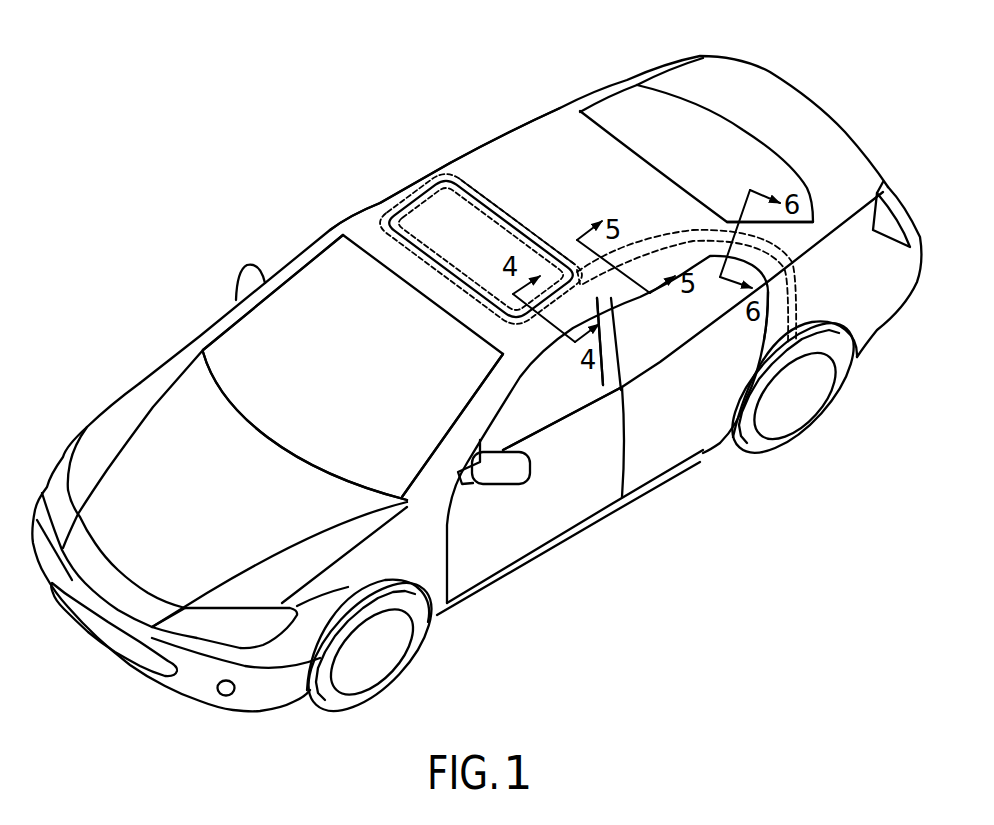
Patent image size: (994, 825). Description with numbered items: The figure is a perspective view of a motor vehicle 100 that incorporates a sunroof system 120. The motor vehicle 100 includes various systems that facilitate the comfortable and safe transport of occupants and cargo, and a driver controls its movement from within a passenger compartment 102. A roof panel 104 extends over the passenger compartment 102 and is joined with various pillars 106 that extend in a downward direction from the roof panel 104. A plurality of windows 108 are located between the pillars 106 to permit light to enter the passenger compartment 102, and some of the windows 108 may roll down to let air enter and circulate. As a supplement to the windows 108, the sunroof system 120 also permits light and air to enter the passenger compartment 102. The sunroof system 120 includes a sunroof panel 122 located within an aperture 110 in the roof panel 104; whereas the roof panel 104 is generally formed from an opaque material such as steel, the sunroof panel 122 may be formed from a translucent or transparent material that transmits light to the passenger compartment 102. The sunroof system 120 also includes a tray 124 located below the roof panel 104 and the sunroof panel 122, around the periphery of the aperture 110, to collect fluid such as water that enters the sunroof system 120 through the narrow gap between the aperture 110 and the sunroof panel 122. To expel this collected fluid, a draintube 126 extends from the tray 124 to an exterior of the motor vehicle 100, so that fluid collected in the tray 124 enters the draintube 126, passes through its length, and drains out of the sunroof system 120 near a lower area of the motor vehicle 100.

The motor vehicle 100 is at (222, 146).
The passenger compartment 102 is at (371, 237).
The roof panel 104 is at (540, 157).
The pillars 106 is at (296, 260).
The windows 108 is at (687, 120).
The aperture 110 is at (413, 198).
The sunroof system 120 is at (415, 268).
The sunroof panel 122 is at (478, 238).
The tray 124 is at (543, 242).
The draintube 126 is at (660, 232).